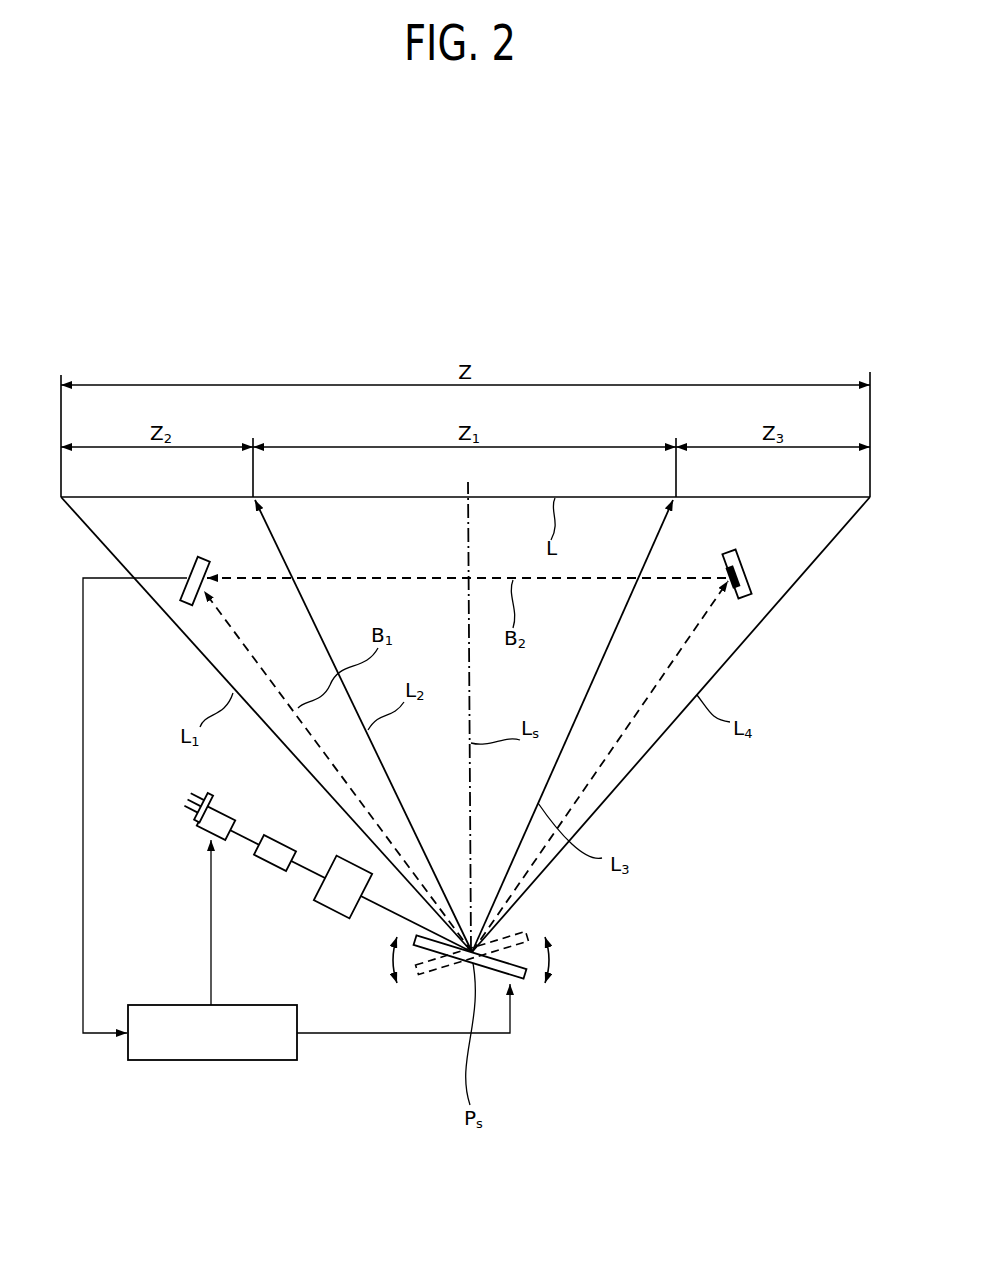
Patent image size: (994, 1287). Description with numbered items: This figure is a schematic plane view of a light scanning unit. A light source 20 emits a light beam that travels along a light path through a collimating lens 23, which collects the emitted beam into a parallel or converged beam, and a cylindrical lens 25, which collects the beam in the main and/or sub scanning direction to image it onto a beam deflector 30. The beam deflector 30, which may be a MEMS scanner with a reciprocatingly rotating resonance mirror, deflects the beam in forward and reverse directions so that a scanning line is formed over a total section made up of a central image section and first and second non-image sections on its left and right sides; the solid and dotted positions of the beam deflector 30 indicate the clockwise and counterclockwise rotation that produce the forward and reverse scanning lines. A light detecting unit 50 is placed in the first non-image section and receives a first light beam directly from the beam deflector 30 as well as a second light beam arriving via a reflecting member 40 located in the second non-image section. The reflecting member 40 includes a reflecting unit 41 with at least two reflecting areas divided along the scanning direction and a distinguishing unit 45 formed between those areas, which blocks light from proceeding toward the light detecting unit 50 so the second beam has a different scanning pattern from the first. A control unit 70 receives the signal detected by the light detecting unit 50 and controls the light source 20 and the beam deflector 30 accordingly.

The light source 20 is at (196, 832).
The collimating lens 23 is at (270, 862).
The cylindrical lens 25 is at (338, 907).
The beam deflector 30 is at (521, 982).
The reflecting member 40 is at (796, 618).
The reflecting unit 41 is at (735, 596).
The distinguishing unit 45 is at (750, 586).
The light detecting unit 50 is at (190, 598).
The control unit 70 is at (212, 1062).